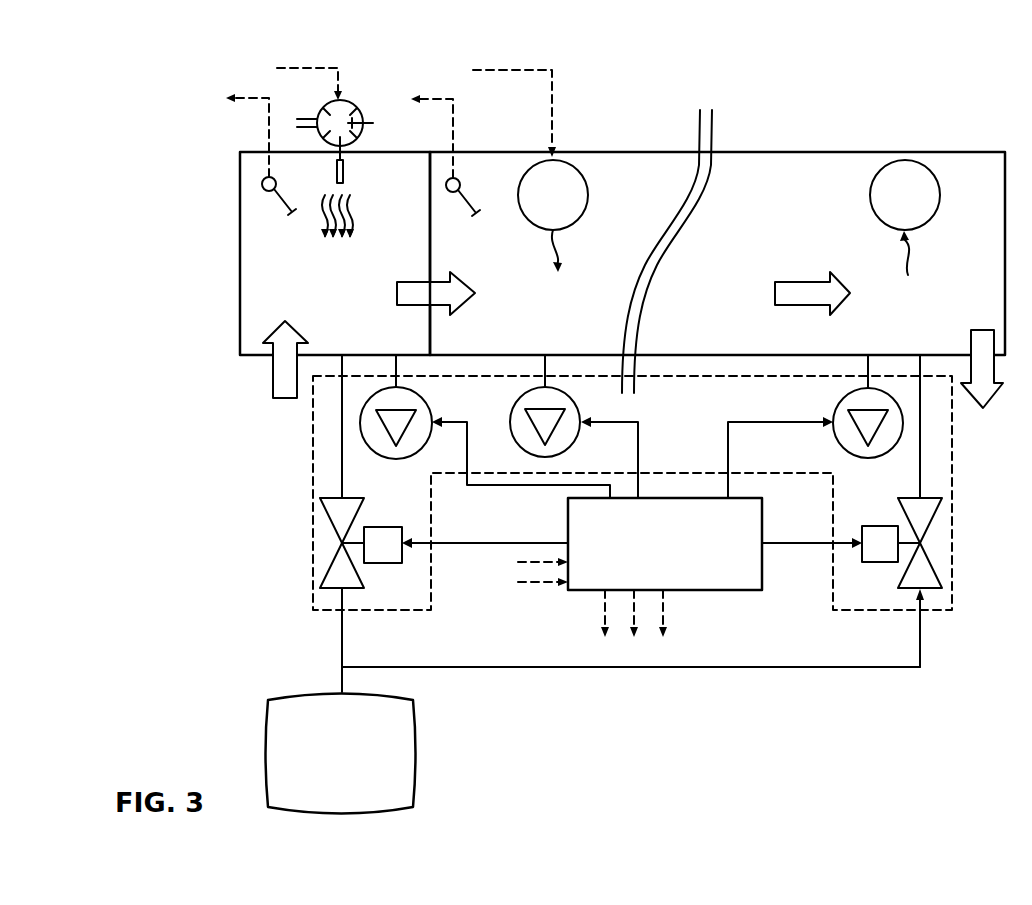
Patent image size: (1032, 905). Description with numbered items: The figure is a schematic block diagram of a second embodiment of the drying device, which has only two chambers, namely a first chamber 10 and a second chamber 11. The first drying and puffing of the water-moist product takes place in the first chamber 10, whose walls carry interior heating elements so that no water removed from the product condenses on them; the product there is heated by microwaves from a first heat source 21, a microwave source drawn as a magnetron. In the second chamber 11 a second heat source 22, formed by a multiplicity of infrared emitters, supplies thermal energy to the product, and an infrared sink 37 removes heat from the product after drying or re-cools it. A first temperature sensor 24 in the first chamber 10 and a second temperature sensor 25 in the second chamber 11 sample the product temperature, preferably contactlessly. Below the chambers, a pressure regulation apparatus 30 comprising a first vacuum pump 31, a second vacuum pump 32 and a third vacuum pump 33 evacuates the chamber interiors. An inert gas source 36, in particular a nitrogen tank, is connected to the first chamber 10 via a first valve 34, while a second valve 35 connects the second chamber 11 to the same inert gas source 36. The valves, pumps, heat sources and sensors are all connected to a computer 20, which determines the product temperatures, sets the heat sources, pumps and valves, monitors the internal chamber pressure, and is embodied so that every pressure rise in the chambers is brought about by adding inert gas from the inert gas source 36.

The first chamber 10 is at (410, 201).
The second chamber 11 is at (783, 203).
The computer 20 is at (680, 556).
The first heat source 21 is at (352, 98).
The second heat source 22 is at (580, 167).
The first temperature sensor 24 is at (262, 184).
The second temperature sensor 25 is at (461, 180).
The pressure regulation apparatus 30 is at (953, 418).
The first vacuum pump 31 is at (360, 423).
The second vacuum pump 32 is at (545, 457).
The third vacuum pump 33 is at (903, 422).
The first valve 34 is at (332, 535).
The second valve 35 is at (931, 534).
The inert gas source 36 is at (355, 761).
The infrared sink 37 is at (937, 170).